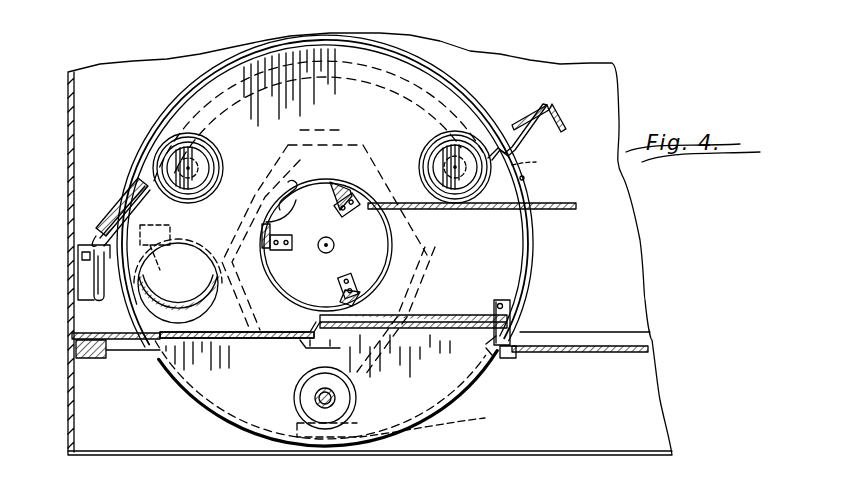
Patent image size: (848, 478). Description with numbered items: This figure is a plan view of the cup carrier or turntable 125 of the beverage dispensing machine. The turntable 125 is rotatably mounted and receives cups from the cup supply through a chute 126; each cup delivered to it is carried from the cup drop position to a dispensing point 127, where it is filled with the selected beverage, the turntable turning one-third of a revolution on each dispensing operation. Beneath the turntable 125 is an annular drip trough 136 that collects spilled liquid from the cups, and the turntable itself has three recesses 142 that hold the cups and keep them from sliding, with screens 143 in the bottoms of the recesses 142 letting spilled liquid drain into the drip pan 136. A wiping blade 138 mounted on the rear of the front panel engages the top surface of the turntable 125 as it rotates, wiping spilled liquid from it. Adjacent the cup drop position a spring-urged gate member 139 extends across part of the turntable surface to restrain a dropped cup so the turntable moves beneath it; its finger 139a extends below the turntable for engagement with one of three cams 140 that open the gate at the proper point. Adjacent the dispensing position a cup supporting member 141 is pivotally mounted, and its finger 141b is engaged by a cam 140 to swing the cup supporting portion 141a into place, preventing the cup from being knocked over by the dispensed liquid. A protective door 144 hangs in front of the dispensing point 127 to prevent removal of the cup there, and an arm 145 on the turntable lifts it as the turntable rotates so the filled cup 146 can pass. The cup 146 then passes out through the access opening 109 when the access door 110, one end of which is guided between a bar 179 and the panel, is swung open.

The annular drip trough 136 is at (190, 86).
The turntable 125 is at (325, 240).
The cup 146 is at (205, 155).
The cams 140 is at (150, 132).
The gate member 139 is at (140, 184).
The finger 139a is at (135, 205).
The recesses 142 is at (430, 152).
The screens 143 is at (303, 384).
The arm 145 is at (334, 183).
The wiping blade 138 is at (247, 318).
The cup supporting member 141 is at (536, 148).
The cup supporting portion 141a is at (551, 104).
The finger 141b is at (528, 168).
The dispensing point 127 is at (541, 182).
The protective door 144 is at (508, 212).
The access door 110 is at (447, 318).
The bar 179 is at (503, 303).
The access opening 109 is at (522, 332).
The chute 126 is at (275, 291).